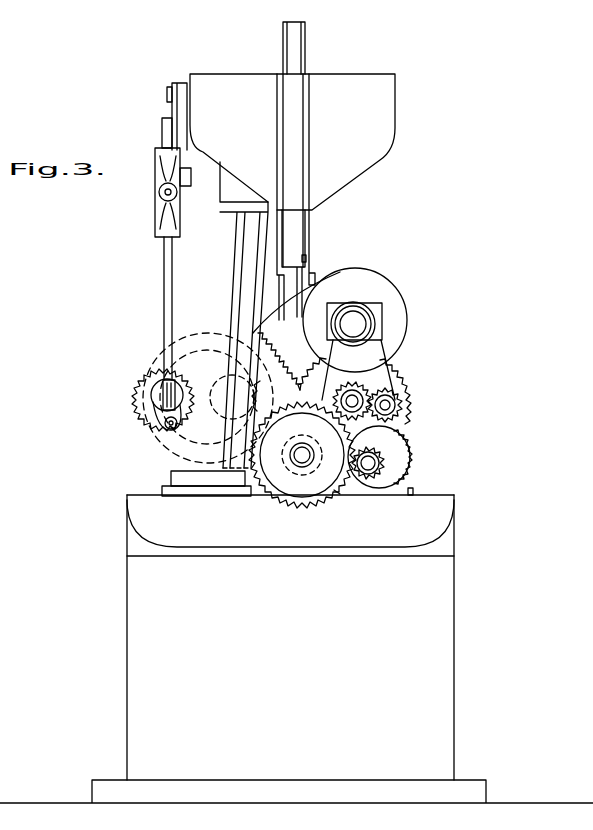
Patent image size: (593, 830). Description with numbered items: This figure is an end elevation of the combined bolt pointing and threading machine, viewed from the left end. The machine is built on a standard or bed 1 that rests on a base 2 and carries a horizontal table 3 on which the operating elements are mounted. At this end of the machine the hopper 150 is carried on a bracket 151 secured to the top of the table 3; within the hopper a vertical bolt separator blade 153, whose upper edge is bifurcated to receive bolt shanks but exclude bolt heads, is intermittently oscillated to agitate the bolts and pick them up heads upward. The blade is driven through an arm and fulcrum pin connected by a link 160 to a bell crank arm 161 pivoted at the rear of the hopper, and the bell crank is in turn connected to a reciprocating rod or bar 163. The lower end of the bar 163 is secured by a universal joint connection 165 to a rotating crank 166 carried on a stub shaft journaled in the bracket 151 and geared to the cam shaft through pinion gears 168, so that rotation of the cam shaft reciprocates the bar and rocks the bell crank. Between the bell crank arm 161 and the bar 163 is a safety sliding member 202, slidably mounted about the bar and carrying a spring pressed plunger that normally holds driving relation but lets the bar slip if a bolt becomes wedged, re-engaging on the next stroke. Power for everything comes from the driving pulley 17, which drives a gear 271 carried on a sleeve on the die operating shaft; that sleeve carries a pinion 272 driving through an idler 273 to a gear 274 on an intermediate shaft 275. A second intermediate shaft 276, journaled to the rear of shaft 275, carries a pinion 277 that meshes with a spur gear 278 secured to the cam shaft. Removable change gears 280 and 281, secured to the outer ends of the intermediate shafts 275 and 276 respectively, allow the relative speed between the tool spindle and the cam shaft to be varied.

The standard or bed 1 is at (126, 603).
The base 2 is at (113, 779).
The horizontal table 3 is at (150, 496).
The driving pulley 17 is at (374, 284).
The hopper 150 is at (393, 95).
The bracket 151 is at (221, 256).
The bolt separator blade 153 is at (303, 36).
The link 160 is at (171, 88).
The bell crank arm 161 is at (185, 81).
The reciprocating rod or bar 163 is at (165, 276).
The universal joint connection 165 is at (162, 403).
The rotating crank 166 is at (161, 414).
The pinion gears 168 is at (213, 381).
The sliding member 202 is at (156, 213).
The gear 271 is at (398, 368).
The pinion 272 is at (352, 383).
The idler 273 is at (401, 403).
The gear 274 is at (411, 453).
The intermediate shaft 275 is at (372, 463).
The second intermediate shaft 276 is at (302, 458).
The pinion 277 is at (282, 480).
The spur gear 278 is at (298, 356).
The change gear 280 is at (372, 480).
The change gear 281 is at (337, 493).